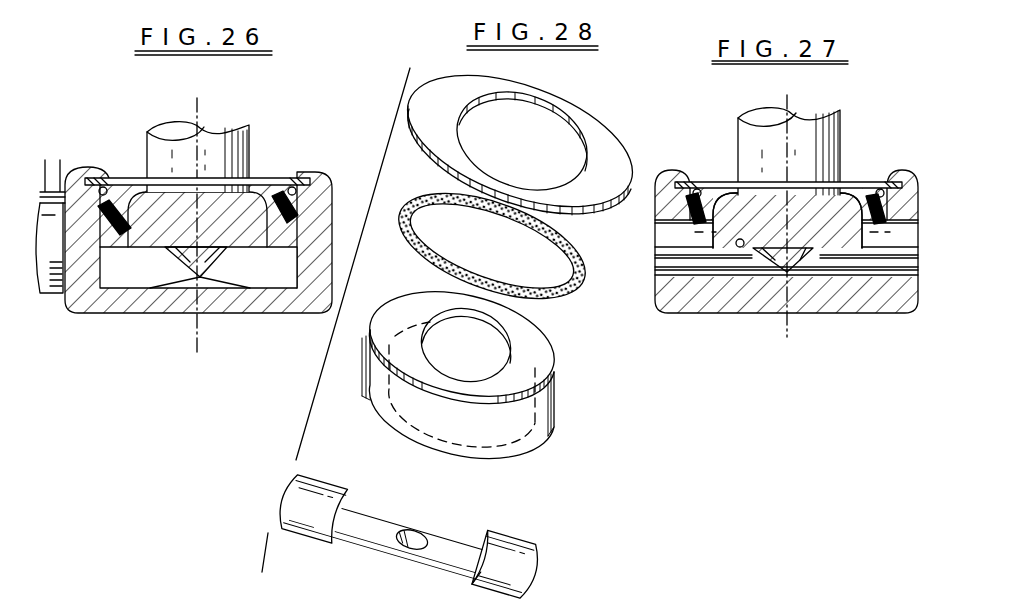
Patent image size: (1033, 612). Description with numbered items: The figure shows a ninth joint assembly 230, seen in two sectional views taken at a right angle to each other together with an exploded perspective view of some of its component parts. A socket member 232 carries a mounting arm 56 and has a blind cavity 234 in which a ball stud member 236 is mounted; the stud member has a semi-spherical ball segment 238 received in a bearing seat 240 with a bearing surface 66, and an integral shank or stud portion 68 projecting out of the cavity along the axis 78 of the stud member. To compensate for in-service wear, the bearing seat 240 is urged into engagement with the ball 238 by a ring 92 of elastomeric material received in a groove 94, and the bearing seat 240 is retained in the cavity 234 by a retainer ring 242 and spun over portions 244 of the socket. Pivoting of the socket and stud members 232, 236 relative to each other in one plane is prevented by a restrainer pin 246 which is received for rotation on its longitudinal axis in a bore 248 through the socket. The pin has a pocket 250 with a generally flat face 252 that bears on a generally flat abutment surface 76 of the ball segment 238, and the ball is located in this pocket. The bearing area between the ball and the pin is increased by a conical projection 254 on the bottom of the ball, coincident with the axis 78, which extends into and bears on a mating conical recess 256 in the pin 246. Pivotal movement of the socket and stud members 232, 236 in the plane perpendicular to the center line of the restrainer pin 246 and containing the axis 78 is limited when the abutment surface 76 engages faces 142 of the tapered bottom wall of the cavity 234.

In FIG. 26, the mounting arm 56 is at (38, 180).
In FIG. 28, the bearing surface 66 is at (483, 360).
In FIG. 26, the shank or stud portion 68 is at (226, 131).
In FIG. 27, the shank or stud portion 68 is at (815, 118).
In FIG. 26, the abutment surface 76 is at (220, 258).
In FIG. 28, the abutment surface 76 is at (655, 252).
In FIG. 27, the abutment surface 76 is at (655, 252).
In FIG. 26, the axis 78 is at (197, 100).
In FIG. 27, the axis 78 is at (787, 98).
In FIG. 26, the resilient ring 92 is at (294, 186).
In FIG. 28, the resilient ring 92 is at (556, 298).
In FIG. 28, the groove 94 is at (556, 376).
In FIG. 26, the faces of the tapered bottom wall 142 is at (143, 268).
In FIG. 26, the ninth joint assembly 230 is at (139, 118).
In FIG. 26, the socket member 232 is at (335, 194).
In FIG. 27, the socket member 232 is at (786, 241).
In FIG. 26, the blind cavity 234 is at (107, 292).
In FIG. 26, the ball stud member 236 is at (257, 126).
In FIG. 27, the ball stud member 236 is at (722, 127).
In FIG. 26, the semi-spherical ball segment 238 is at (250, 200).
In FIG. 27, the semi-spherical ball segment 238 is at (757, 213).
In FIG. 26, the bearing seat 240 is at (71, 200).
In FIG. 28, the bearing seat 240 is at (412, 450).
In FIG. 27, the bearing seat 240 is at (848, 181).
In FIG. 26, the retainer ring 242 is at (105, 180).
In FIG. 28, the retainer ring 242 is at (613, 102).
In FIG. 27, the retainer ring 242 is at (867, 181).
In FIG. 26, the spun over portions 244 is at (300, 181).
In FIG. 27, the spun over portions 244 is at (888, 177).
In FIG. 26, the restrainer pin 246 is at (164, 257).
In FIG. 28, the restrainer pin 246 is at (267, 520).
In FIG. 27, the restrainer pin 246 is at (668, 239).
In FIG. 26, the bore 248 is at (177, 283).
In FIG. 27, the bore 248 is at (853, 270).
In FIG. 28, the pocket 250 is at (458, 532).
In FIG. 28, the flat face 252 is at (437, 557).
In FIG. 27, the flat face 252 is at (740, 246).
In FIG. 26, the conical projection 254 is at (207, 270).
In FIG. 27, the conical projection 254 is at (807, 250).
In FIG. 26, the conical recess 256 is at (208, 254).
In FIG. 28, the conical recess 256 is at (414, 538).
In FIG. 27, the conical recess 256 is at (778, 253).